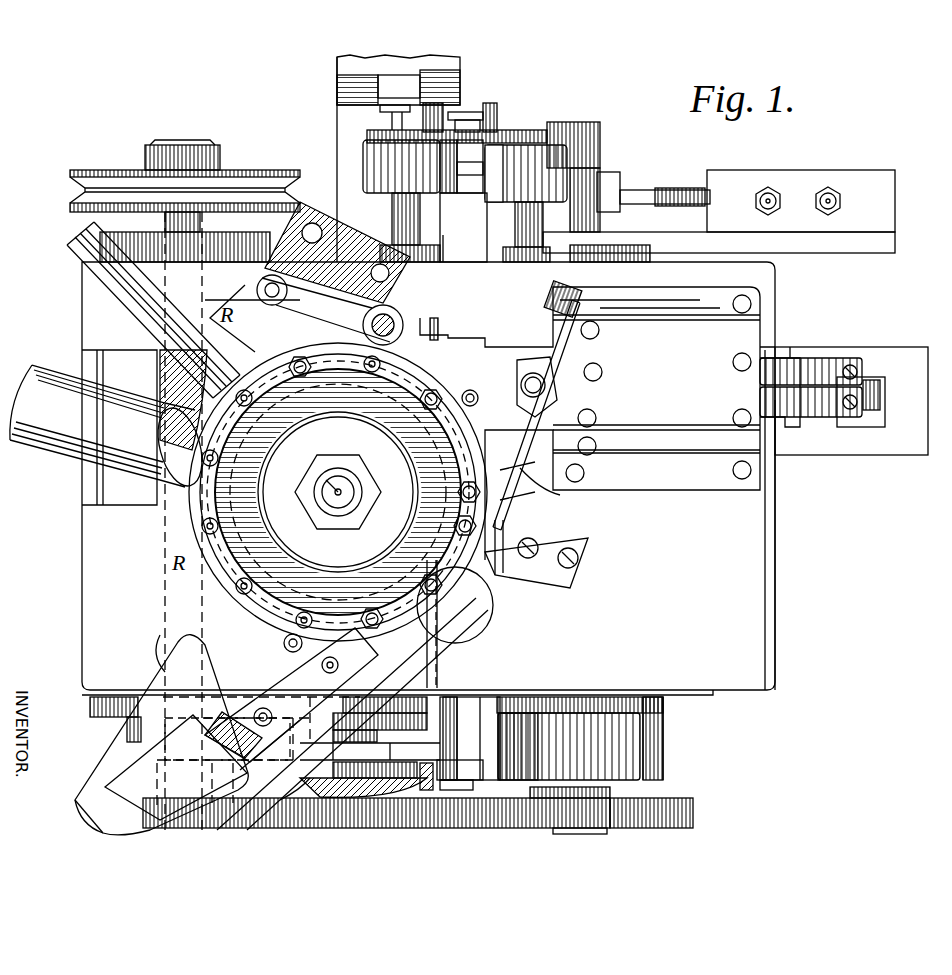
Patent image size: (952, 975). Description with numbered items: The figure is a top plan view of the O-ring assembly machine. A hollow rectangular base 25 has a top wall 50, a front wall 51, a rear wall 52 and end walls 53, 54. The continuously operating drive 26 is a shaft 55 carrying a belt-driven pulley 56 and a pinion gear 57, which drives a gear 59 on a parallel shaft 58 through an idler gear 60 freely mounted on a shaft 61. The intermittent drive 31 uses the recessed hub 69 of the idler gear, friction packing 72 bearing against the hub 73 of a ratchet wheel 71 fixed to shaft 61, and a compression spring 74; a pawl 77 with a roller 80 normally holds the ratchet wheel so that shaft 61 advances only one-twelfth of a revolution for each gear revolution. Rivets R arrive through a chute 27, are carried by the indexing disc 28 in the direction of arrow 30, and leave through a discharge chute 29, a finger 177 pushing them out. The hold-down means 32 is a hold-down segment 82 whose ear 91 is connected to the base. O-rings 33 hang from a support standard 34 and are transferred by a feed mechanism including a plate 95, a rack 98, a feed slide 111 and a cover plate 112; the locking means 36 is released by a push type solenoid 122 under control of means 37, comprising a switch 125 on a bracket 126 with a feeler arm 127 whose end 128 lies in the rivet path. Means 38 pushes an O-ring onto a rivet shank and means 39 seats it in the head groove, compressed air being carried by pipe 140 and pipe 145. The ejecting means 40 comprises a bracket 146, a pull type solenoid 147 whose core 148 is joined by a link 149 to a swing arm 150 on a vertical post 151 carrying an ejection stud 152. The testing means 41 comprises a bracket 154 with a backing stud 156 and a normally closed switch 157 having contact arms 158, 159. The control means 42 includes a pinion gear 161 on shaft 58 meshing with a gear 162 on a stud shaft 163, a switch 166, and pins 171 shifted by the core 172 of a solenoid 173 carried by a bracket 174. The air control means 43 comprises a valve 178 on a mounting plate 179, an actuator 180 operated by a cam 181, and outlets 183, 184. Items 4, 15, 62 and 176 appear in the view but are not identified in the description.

The section line 4 is at (150, 315).
The section line 15 is at (415, 293).
The base 25 is at (778, 575).
The continuously operating drive 26 is at (122, 170).
The chute 27 is at (95, 283).
The indexing disc 28 is at (260, 598).
The discharge chute 29 is at (55, 447).
The arrow 30 is at (320, 420).
The intermittent drive 31 is at (508, 735).
The hold-down means 32 is at (322, 590).
The O-rings 33 is at (478, 392).
The support standard 34 is at (355, 355).
The locking means 36 is at (872, 375).
The control means for locking means 37 is at (330, 200).
The O-ring pushing means 38 is at (465, 338).
The O-ring setting means 39 is at (470, 637).
The ejecting means 40 is at (290, 665).
The testing means 41 is at (508, 585).
The control means 42 is at (520, 110).
The air control means 43 is at (748, 170).
The top wall 50 is at (740, 635).
The front wall 51 is at (690, 700).
The rear wall 52 is at (702, 262).
The end wall 53 is at (82, 565).
The end wall 54 is at (778, 520).
The shaft 55 is at (195, 225).
The pulley 56 is at (255, 180).
The pinion gear 57 is at (150, 810).
The shaft 58 is at (635, 795).
The gear 59 is at (670, 800).
The idler gear 60 is at (430, 815).
The shaft 61 is at (332, 690).
The hub nut 62 is at (350, 455).
The recessed hub 69 is at (445, 770).
The ratchet wheel 71 is at (375, 745).
The friction packing 72 is at (345, 780).
The hub 73 is at (320, 775).
The compression spring 74 is at (285, 765).
The pawl 77 is at (440, 750).
The roller 80 is at (490, 780).
The hold-down segment 82 is at (455, 600).
The ear 91 is at (395, 323).
The plate 95 is at (700, 312).
The rack 98 is at (800, 415).
The feed slide 111 is at (790, 365).
The cover plate 112 is at (660, 432).
The push type solenoid 122 is at (890, 445).
The switch 125 is at (375, 225).
The bracket 126 is at (258, 270).
The feeler arm 127 is at (335, 320).
The end 128 is at (385, 378).
The pipe 140 is at (440, 318).
The pipe 145 is at (358, 468).
The bracket 146 is at (185, 632).
The pull type solenoid 147 is at (148, 752).
The core 148 is at (193, 715).
The link 149 is at (290, 680).
The swing arm 150 is at (348, 665).
The vertical post 151 is at (284, 645).
The ejection stud 152 is at (374, 605).
The bracket 154 is at (525, 575).
The backing stud 156 is at (352, 492).
The switch 157 is at (555, 428).
The contact arm 158 is at (535, 455).
The contact arm 159 is at (560, 497).
The pinion gear 161 is at (600, 140).
The gear 162 is at (560, 128).
The stud shaft 163 is at (472, 262).
The switch 166 is at (365, 162).
The pins 171 is at (420, 88).
The core 172 is at (378, 98).
The solenoid 173 is at (459, 65).
The bracket 174 is at (385, 108).
The block 176 is at (560, 145).
The finger 177 is at (165, 485).
The valve 178 is at (880, 178).
The mounting plate 179 is at (822, 245).
The actuator 180 is at (660, 185).
The cam 181 is at (632, 160).
The outlet 183 is at (772, 196).
The outlet 184 is at (836, 206).